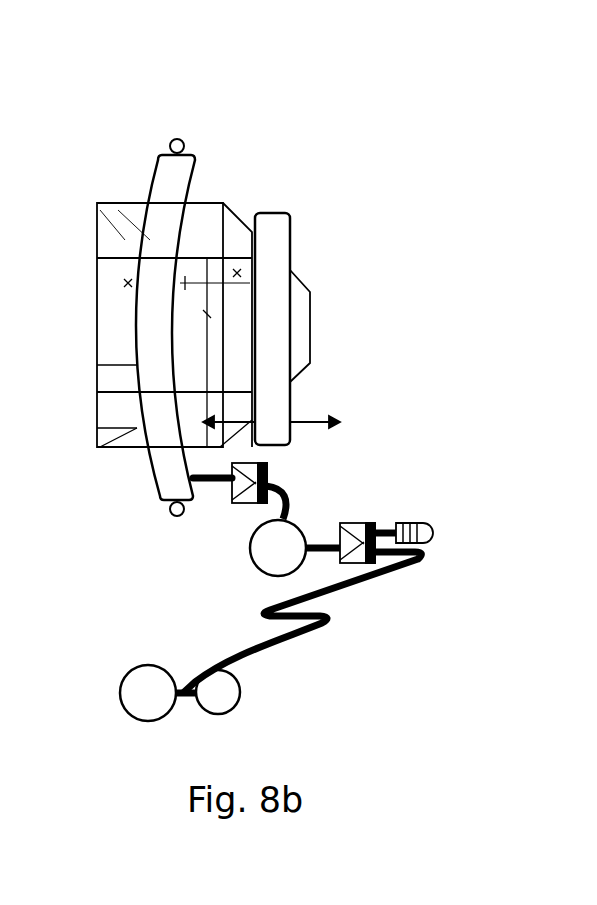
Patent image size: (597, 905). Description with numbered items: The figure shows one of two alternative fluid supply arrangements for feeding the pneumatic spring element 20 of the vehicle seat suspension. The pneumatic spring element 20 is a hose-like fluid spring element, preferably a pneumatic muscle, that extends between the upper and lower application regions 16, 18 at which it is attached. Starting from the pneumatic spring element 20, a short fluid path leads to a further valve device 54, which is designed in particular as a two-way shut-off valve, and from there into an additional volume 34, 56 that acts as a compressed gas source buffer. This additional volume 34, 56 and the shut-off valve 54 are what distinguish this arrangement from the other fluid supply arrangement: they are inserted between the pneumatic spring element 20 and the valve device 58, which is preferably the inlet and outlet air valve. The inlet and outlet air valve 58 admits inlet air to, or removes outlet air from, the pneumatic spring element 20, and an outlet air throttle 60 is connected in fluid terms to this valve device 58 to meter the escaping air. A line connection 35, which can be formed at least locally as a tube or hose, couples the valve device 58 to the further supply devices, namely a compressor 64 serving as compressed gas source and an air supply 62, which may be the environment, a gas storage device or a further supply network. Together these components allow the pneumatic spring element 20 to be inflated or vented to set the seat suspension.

The application region 16 is at (177, 139).
The application region 18 is at (170, 514).
The pneumatic spring element 20 is at (197, 163).
The additional volume 34 is at (192, 590).
The additional volume 56 is at (262, 540).
The two-way shut-off valve 54 is at (268, 463).
The inlet and outlet air valve 58 is at (350, 523).
The outlet air throttle 60 is at (435, 540).
The line connection 35 is at (327, 617).
The air supply 62 is at (157, 703).
The compressor 64 is at (220, 690).